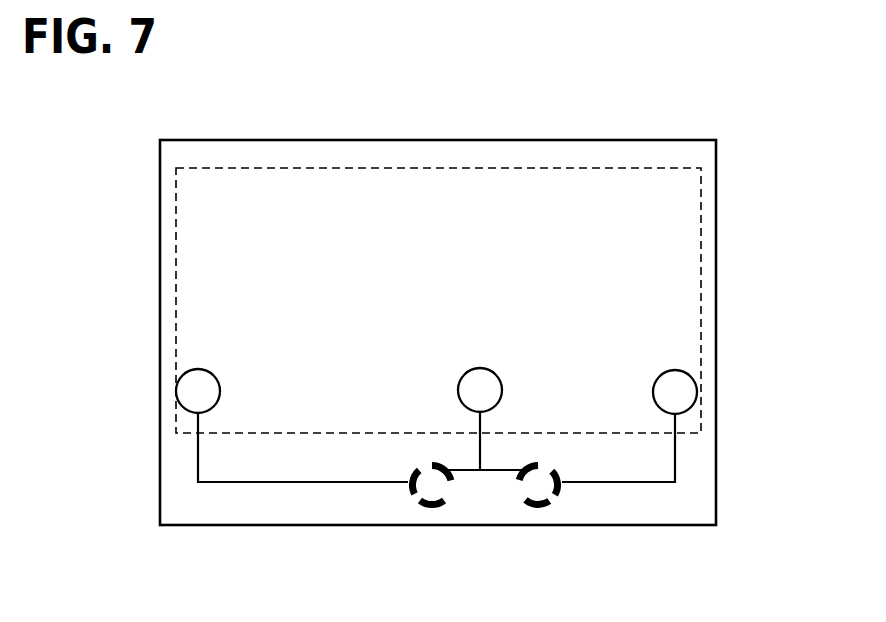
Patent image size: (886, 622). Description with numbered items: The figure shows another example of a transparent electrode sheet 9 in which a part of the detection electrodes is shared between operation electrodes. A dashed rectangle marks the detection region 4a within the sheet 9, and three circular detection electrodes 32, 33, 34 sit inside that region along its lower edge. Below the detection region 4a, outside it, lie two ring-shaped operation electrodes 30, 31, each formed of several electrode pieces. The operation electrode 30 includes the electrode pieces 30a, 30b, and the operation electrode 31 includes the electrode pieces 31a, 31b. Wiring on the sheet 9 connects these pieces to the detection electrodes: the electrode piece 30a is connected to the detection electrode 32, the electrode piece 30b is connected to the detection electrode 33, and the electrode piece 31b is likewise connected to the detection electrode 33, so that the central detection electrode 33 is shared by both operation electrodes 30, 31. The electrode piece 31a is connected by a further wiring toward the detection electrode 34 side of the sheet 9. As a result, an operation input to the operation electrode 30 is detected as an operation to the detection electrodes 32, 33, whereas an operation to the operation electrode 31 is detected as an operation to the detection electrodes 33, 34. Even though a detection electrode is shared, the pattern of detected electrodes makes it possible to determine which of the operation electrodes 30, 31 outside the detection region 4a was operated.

The transparent electrode sheet 9 is at (716, 462).
The detection region 4a is at (701, 258).
The operation electrode 30 is at (397, 499).
The electrode piece 30a is at (407, 477).
The electrode piece 30b is at (440, 464).
The operation electrode 31 is at (577, 499).
The electrode piece 31a is at (571, 513).
The electrode piece 31b is at (534, 464).
The detection electrode 32 is at (220, 388).
The detection electrode 33 is at (502, 383).
The detection electrode 34 is at (653, 392).